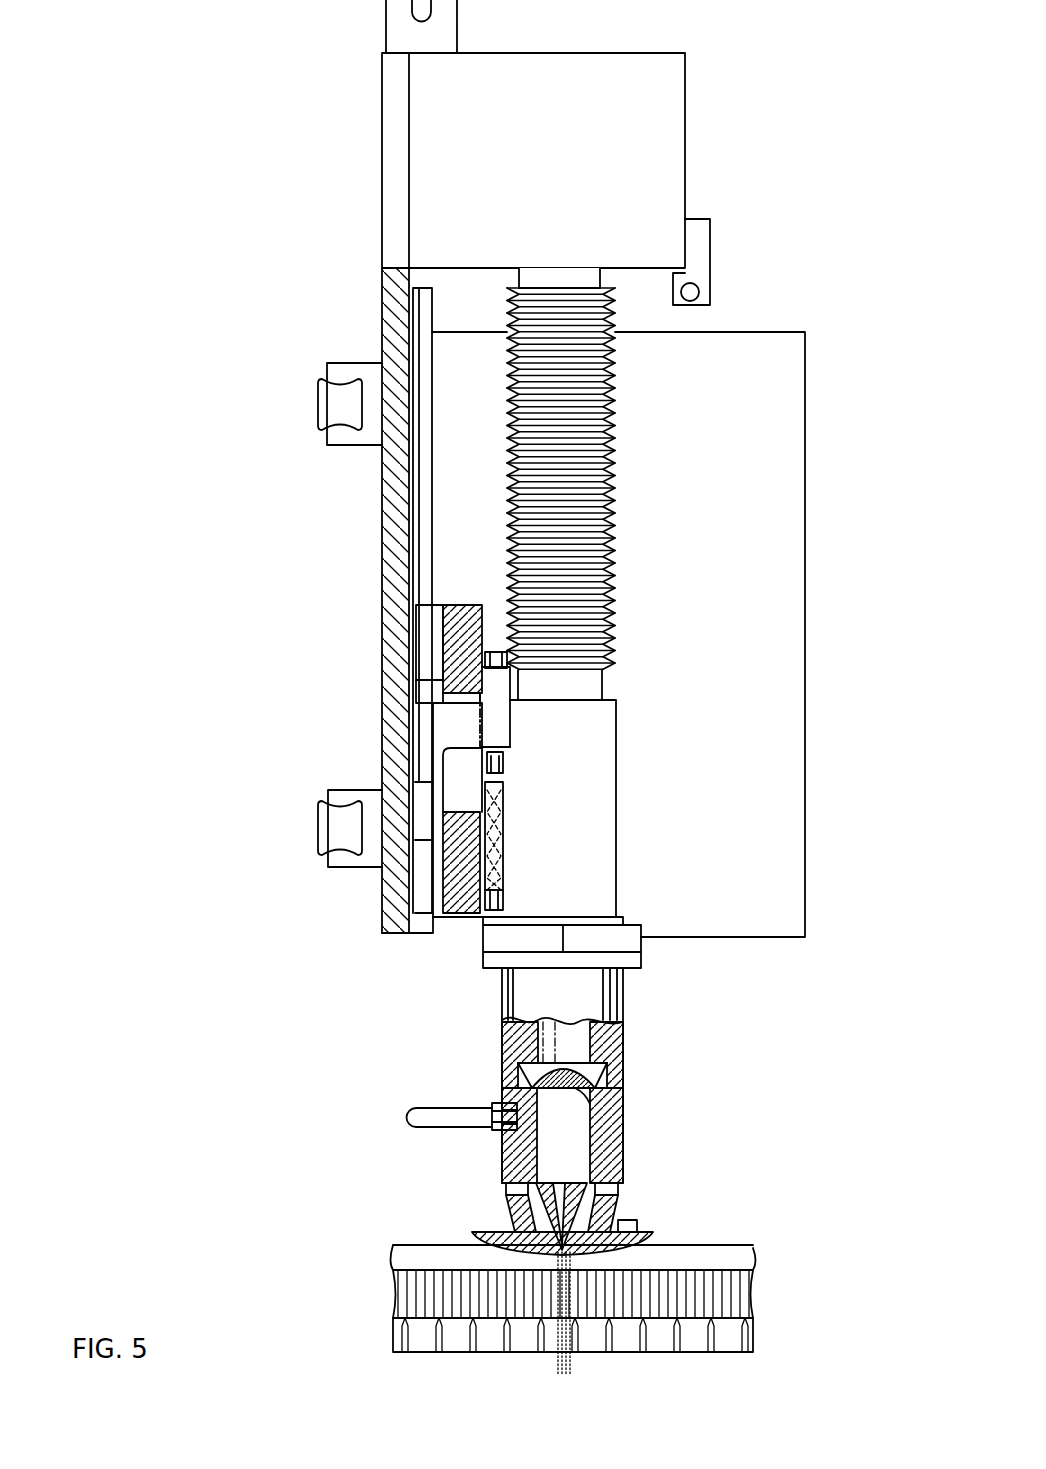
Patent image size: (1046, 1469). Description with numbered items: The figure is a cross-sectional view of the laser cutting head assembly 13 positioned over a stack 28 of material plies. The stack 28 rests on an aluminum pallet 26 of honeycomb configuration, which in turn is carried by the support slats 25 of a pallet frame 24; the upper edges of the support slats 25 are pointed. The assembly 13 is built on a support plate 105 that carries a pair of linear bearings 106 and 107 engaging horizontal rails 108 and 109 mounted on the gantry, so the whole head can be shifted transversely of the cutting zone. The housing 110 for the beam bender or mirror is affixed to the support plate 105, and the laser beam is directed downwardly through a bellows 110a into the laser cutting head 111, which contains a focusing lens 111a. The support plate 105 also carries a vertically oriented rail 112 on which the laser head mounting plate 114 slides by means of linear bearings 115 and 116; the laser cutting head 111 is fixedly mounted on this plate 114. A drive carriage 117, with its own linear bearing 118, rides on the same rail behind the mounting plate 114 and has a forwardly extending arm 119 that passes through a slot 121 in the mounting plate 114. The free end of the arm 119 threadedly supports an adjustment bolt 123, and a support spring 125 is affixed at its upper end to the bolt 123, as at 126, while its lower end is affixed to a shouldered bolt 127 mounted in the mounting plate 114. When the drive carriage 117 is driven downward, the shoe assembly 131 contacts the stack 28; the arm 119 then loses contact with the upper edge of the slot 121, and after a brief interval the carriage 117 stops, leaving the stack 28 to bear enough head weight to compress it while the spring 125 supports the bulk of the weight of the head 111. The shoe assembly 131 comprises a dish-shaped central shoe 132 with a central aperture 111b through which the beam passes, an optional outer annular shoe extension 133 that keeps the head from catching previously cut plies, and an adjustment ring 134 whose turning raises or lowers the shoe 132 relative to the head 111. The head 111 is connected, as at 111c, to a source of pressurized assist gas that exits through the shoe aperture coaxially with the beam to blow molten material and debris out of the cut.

The housing 110 is at (660, 120).
The lead screw 110a is at (615, 518).
The laser cutting head assembly 13 is at (803, 735).
The support plate 105 is at (393, 540).
The linear bearing 106 is at (338, 368).
The horizontal rail 108 is at (333, 407).
The linear bearing 107 is at (345, 860).
The horizontal rail 109 is at (328, 823).
The vertically oriented rail 112 is at (428, 372).
The linear bearing 115 is at (422, 632).
The adjustment bolt 123 is at (493, 652).
The forwardly extending arm 119 is at (500, 713).
The drive carriage 117 is at (462, 723).
The linear bearing 118 is at (423, 748).
The linear bearing 116 is at (423, 890).
The slot 121 is at (468, 790).
The laser head mounting plate 114 is at (462, 905).
The spring upper attachment 126 is at (503, 757).
The support spring 125 is at (503, 835).
The shouldered bolt 127 is at (505, 903).
The laser cutting head 111 is at (607, 985).
The focusing lens 111a is at (600, 1108).
The assist gas connection 111c is at (447, 1108).
The central aperture 111b is at (613, 1156).
The central shoe 132 is at (503, 1222).
The outer annular shoe extension 133 is at (472, 1235).
The adjustment ring 134 is at (636, 1222).
The laser cutting head shoe assembly 131 is at (648, 1218).
The stack 28 is at (730, 1255).
The aluminum pallet 26 is at (743, 1288).
The pallet frame 24 is at (743, 1330).
The support slats 25 is at (405, 1328).